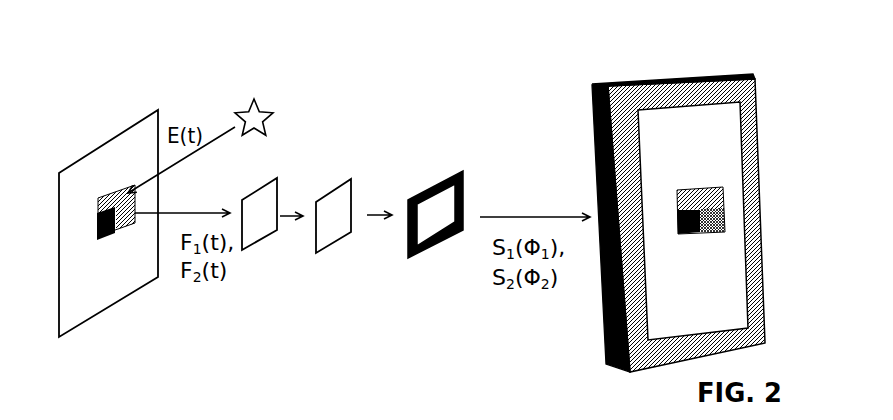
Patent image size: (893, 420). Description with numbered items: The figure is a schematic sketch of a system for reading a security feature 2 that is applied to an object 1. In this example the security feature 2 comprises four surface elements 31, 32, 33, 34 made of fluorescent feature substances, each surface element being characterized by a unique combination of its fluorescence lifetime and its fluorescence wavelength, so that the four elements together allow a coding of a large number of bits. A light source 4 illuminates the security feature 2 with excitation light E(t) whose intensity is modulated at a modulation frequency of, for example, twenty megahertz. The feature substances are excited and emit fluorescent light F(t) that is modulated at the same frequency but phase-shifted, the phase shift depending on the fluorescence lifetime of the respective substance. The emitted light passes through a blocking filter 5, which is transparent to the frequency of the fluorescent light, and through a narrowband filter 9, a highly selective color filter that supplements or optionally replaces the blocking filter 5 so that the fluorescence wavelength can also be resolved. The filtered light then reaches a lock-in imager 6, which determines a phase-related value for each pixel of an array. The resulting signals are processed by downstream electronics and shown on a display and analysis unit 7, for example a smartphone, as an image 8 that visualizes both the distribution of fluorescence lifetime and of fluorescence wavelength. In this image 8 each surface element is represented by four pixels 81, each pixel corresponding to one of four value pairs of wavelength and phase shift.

The object 1 is at (100, 148).
The security feature 2 is at (110, 252).
The surface element 31 is at (106, 209).
The surface element 32 is at (132, 198).
The surface element 33 is at (97, 237).
The surface element 34 is at (122, 225).
The light source 4 is at (252, 98).
The blocking filter 5 is at (267, 228).
The narrowband filter 9 is at (333, 227).
The lock-in imager 6 is at (437, 222).
The display and analysis unit 7 is at (738, 170).
The image 8 is at (695, 250).
The pixels 81 is at (680, 200).